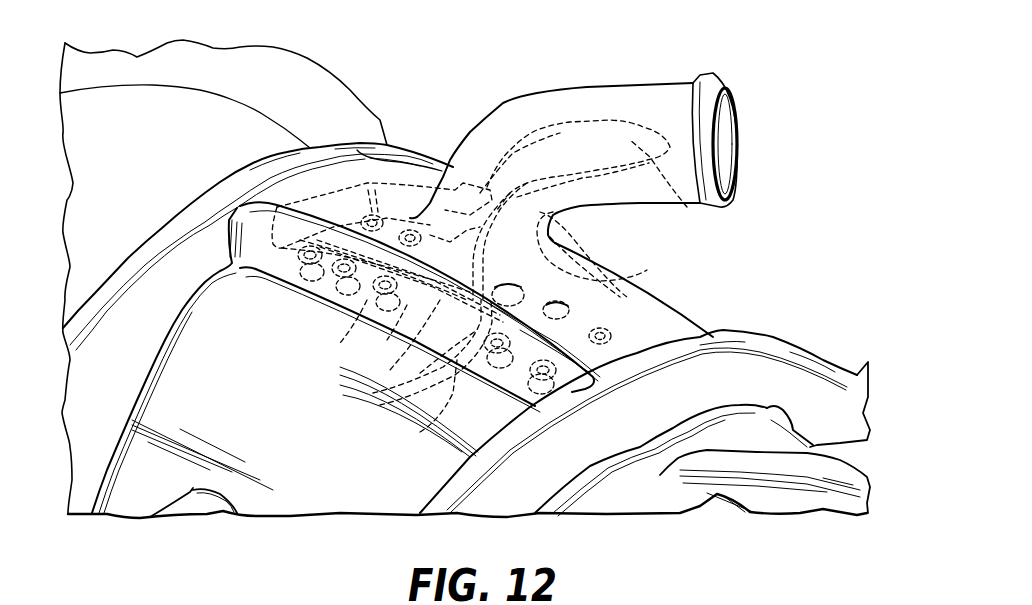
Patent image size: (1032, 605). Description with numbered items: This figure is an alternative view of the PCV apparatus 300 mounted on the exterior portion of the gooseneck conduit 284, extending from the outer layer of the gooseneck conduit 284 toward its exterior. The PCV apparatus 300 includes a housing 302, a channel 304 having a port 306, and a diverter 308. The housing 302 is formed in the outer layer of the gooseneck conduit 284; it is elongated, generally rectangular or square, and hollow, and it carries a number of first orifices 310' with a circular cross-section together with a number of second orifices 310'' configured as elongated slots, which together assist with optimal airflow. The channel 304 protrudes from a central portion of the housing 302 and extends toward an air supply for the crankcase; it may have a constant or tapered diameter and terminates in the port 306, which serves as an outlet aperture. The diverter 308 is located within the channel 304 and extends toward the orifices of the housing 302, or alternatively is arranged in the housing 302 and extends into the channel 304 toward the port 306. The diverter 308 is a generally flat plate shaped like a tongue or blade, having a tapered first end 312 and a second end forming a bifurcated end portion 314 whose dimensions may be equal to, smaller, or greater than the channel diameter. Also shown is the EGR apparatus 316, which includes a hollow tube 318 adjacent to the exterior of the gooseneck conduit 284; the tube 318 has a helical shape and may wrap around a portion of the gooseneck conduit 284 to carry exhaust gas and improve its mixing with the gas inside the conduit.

The gooseneck conduit 284 is at (150, 486).
The PCV apparatus 300 is at (410, 160).
The housing 302 is at (360, 300).
The channel 304 is at (545, 105).
The port 306 is at (742, 143).
The diverter 308 is at (607, 137).
The first orifices 310' is at (541, 344).
The second orifices 310'' is at (550, 267).
The first end 312 is at (687, 207).
The bifurcated end portion 314 is at (373, 393).
The EGR apparatus 316 is at (235, 133).
The tube 318 is at (470, 332).